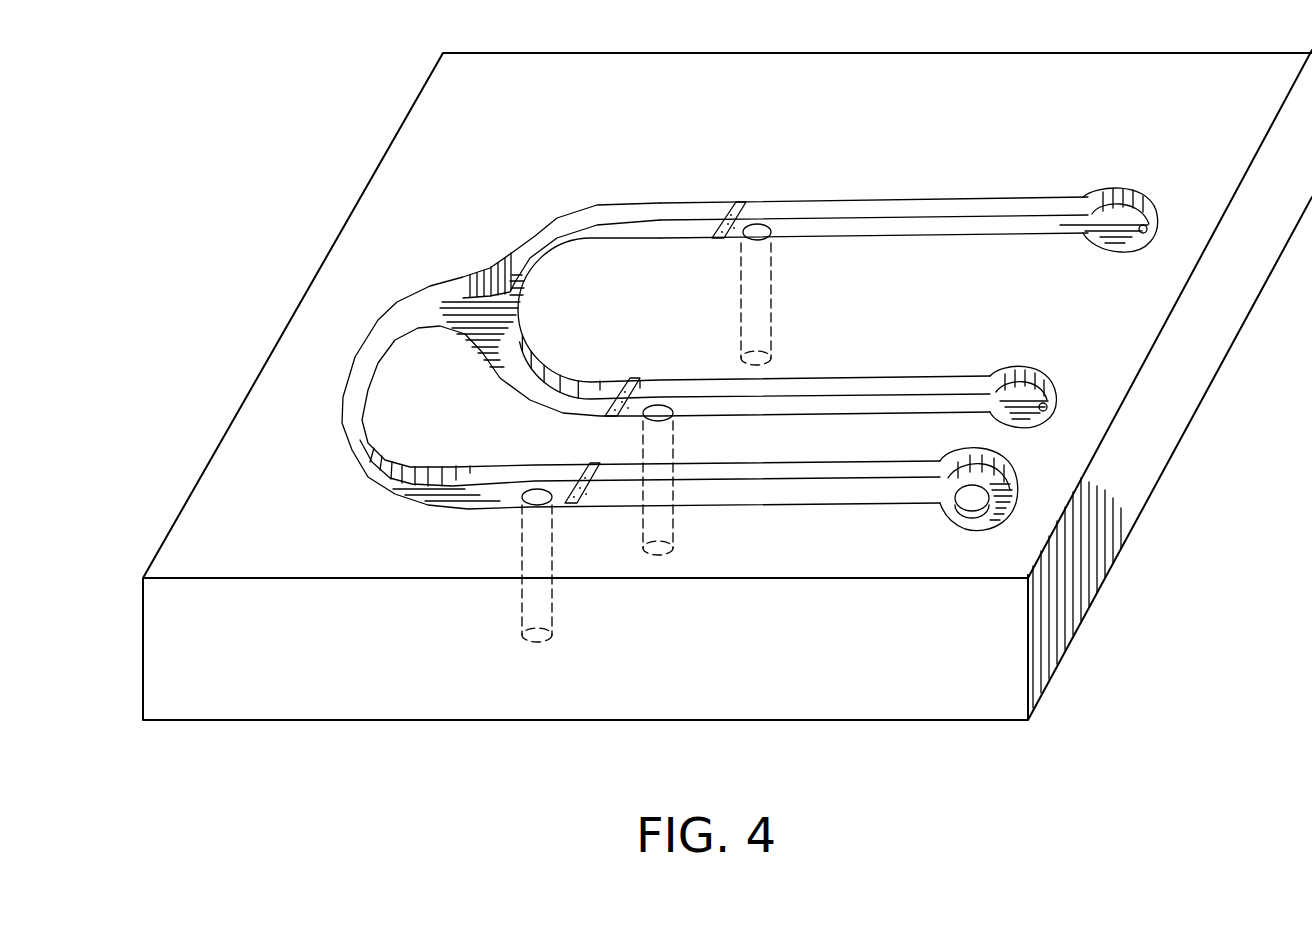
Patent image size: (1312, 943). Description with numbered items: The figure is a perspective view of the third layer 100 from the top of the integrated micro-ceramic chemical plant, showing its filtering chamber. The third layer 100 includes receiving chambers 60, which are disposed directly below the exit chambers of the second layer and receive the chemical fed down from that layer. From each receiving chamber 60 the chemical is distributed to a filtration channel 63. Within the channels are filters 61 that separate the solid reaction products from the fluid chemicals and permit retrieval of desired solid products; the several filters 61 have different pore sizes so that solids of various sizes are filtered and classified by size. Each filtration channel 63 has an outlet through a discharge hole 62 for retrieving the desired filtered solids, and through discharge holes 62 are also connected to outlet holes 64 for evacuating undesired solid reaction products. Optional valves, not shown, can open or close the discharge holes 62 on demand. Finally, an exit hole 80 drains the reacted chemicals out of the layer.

The third layer 100 is at (1155, 395).
The filtration channel 63 is at (622, 228).
The receiving chamber 60 is at (1145, 233).
The exit hole 80 is at (971, 512).
The filter 61 is at (718, 212).
The discharge hole 62 is at (762, 228).
The outlet hole 64 is at (770, 358).